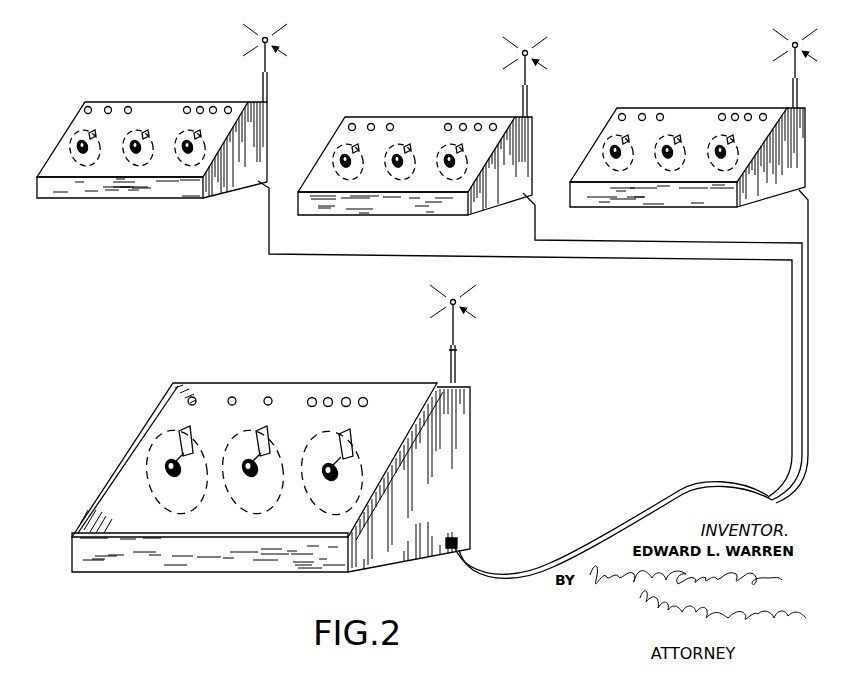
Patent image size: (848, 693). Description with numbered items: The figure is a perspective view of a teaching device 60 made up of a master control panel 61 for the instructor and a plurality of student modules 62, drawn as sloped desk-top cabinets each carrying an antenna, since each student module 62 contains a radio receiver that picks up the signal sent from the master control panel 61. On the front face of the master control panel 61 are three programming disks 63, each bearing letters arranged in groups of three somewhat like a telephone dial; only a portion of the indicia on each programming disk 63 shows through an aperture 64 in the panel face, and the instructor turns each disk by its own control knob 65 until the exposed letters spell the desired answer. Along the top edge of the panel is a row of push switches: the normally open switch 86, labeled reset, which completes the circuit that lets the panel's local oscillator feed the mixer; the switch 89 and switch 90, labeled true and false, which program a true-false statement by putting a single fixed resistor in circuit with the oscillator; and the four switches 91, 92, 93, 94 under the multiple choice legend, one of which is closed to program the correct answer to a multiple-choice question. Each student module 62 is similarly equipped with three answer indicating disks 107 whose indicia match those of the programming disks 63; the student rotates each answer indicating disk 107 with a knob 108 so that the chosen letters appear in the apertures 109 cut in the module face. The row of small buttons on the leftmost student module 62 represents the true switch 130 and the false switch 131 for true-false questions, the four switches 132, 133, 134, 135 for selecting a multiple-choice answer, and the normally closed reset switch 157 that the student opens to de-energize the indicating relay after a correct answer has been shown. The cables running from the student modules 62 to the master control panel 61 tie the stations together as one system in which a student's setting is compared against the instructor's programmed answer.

The teaching device 60 is at (170, 381).
The master control panel 61 is at (118, 452).
The student module 62 is at (395, 114).
The programming disk 63 is at (223, 496).
The aperture 64 is at (176, 437).
The control knob 65 is at (166, 469).
The normally open switch 86 is at (268, 396).
The switch 89 is at (192, 396).
The switch 90 is at (232, 396).
The switch 91 is at (311, 397).
The switch 92 is at (328, 397).
The switch 93 is at (348, 397).
The switch 94 is at (366, 397).
The answer indicating disk 107 is at (125, 162).
The knob 108 is at (80, 144).
The aperture 109 is at (90, 131).
The true switch 130 is at (86, 107).
The false switch 131 is at (107, 107).
The switch 132 is at (185, 107).
The switch 133 is at (199, 107).
The switch 134 is at (214, 107).
The switch 135 is at (229, 107).
The reset switch 157 is at (128, 107).